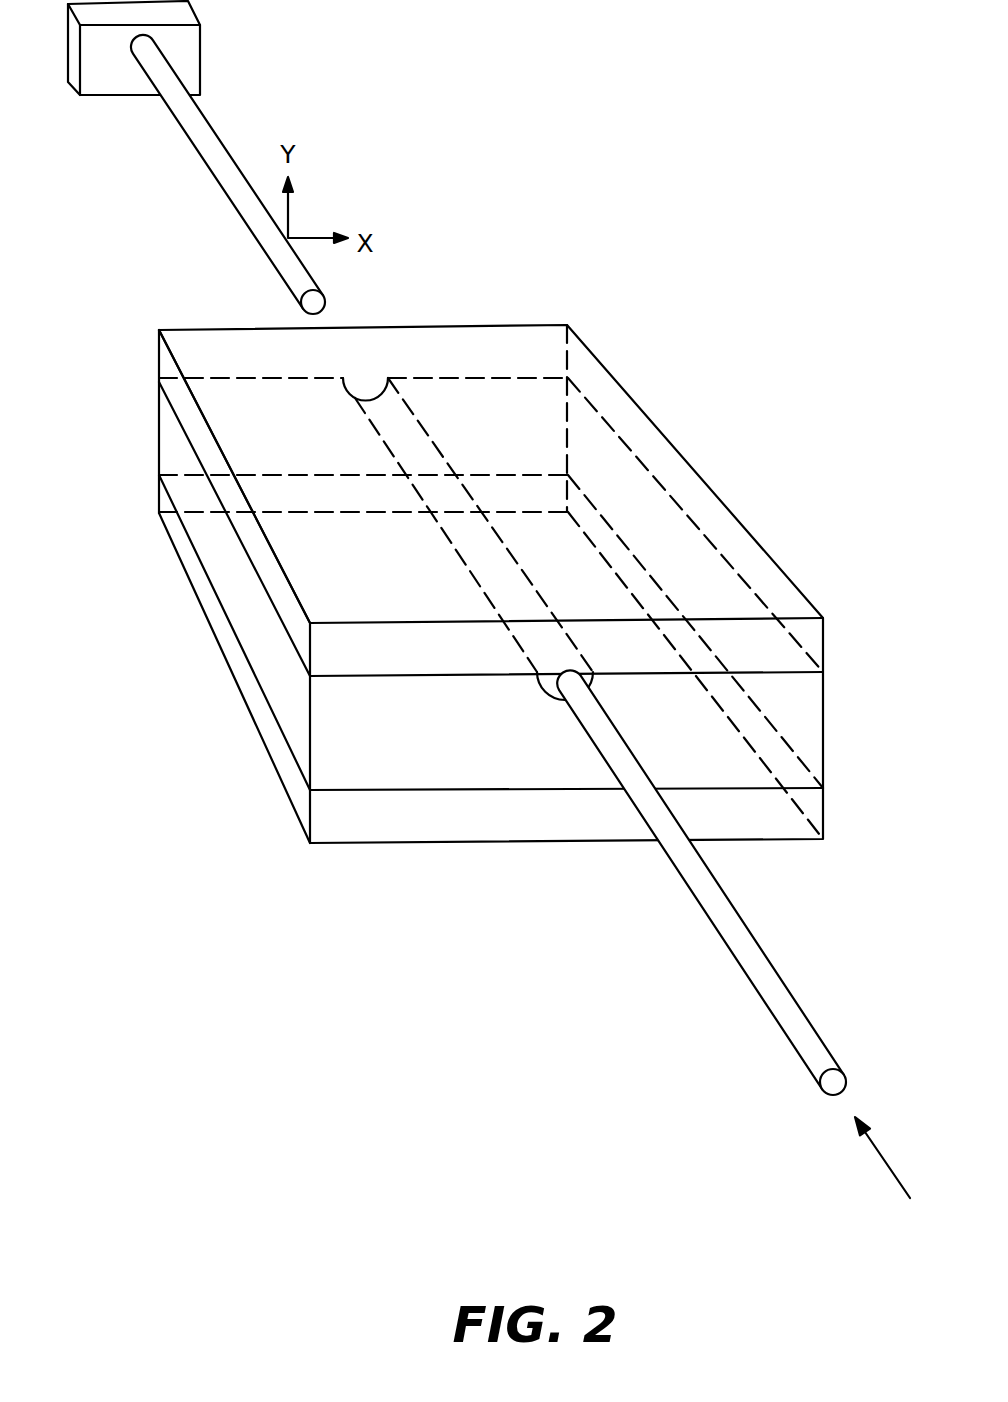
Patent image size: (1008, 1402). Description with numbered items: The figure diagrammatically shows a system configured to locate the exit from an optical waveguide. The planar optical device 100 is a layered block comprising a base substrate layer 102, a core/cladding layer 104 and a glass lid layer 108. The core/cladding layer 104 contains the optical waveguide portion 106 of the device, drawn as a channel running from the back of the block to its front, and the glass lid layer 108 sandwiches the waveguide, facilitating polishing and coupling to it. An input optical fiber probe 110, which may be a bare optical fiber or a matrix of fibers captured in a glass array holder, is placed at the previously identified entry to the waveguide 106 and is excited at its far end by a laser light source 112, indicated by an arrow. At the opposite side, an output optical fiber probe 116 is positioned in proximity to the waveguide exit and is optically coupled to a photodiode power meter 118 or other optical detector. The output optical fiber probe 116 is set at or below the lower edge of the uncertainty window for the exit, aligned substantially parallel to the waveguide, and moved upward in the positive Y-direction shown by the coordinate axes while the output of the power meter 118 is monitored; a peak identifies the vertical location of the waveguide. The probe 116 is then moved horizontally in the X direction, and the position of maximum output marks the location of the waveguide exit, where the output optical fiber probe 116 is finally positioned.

The planar optical device 100 is at (760, 510).
The base substrate layer 102 is at (290, 773).
The core/cladding layer 104 is at (223, 555).
The optical waveguide portion 106 is at (547, 695).
The glass lid layer 108 is at (190, 413).
The input optical fiber probe 110 is at (758, 977).
The laser light source 112 is at (888, 1168).
The output optical fiber probe 116 is at (218, 182).
The photodiode power meter 118 is at (200, 58).